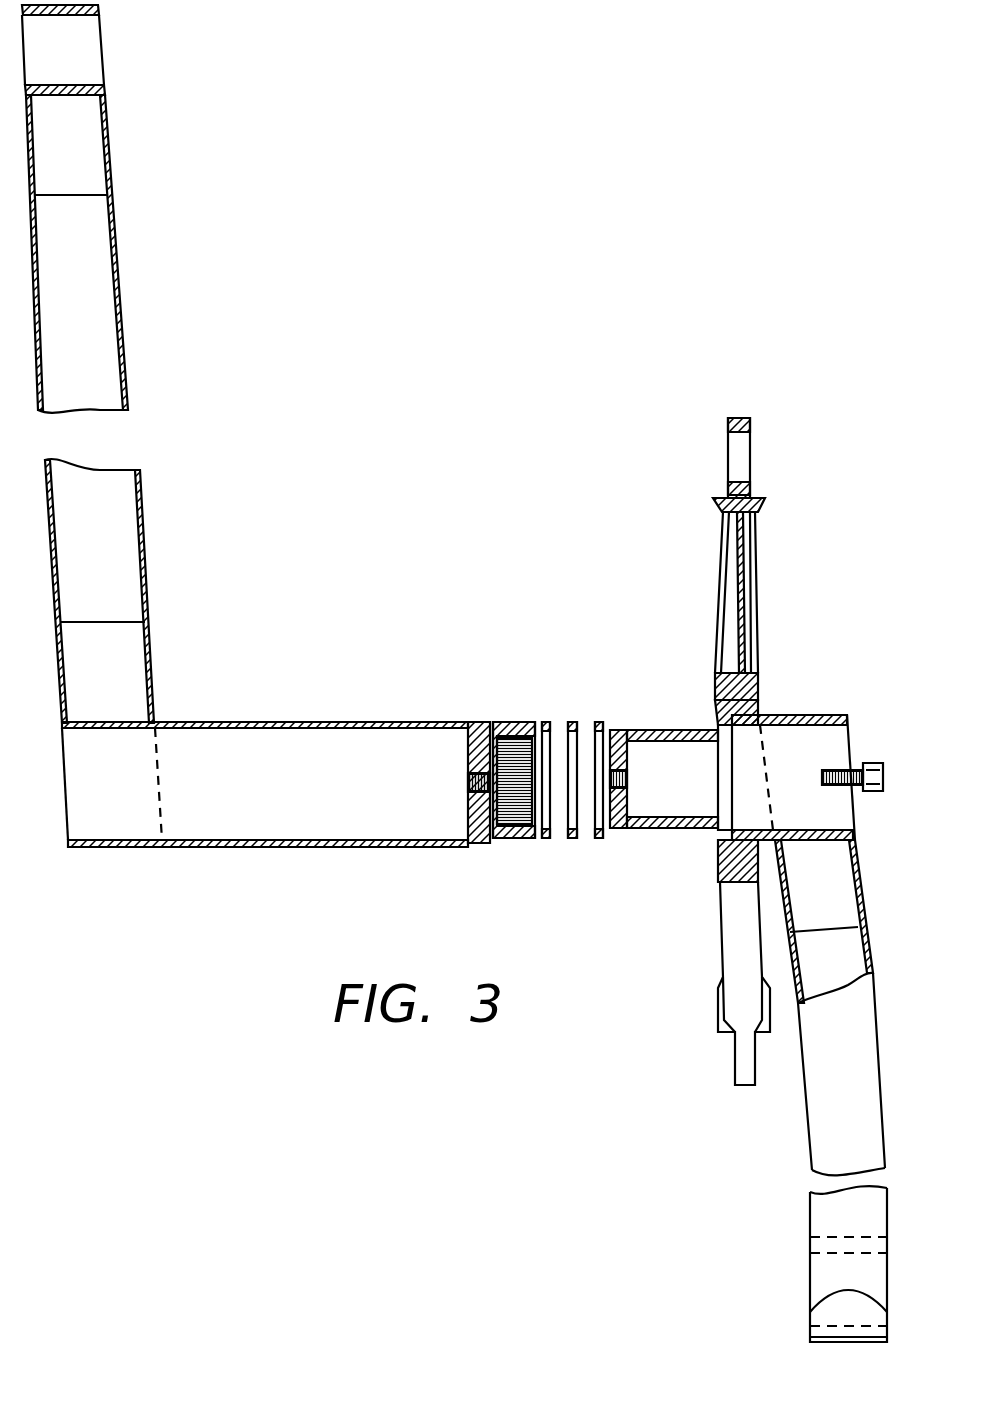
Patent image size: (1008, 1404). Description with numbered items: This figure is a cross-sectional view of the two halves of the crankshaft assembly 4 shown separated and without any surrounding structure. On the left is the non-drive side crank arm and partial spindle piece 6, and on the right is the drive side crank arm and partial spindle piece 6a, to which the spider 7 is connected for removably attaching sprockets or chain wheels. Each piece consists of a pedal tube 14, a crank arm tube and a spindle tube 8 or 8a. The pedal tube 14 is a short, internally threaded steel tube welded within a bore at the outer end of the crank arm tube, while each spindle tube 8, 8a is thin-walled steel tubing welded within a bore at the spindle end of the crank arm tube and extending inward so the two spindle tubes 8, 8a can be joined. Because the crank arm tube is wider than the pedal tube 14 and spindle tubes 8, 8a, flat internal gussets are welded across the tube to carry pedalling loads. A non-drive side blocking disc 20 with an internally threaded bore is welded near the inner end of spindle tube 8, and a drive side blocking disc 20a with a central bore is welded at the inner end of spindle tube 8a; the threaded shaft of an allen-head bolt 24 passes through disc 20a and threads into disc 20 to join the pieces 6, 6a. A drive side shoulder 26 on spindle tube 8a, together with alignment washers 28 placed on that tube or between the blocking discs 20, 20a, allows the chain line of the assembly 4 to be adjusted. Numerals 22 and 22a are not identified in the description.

The crankshaft assembly 4 is at (792, 716).
The non-drive side crank arm and partial spindle piece 6 is at (146, 552).
The drive side crank arm and partial spindle piece 6a is at (809, 1141).
The spider 7 is at (757, 600).
The non-drive side spindle tube 8 is at (268, 848).
The drive side spindle tube 8a is at (634, 730).
The pedal tube 14 is at (108, 88).
The non-drive side blocking disc 20 is at (472, 758).
The drive side blocking disc 20a is at (620, 818).
The threaded coupling 22 is at (485, 722).
The threaded coupling 22a is at (612, 825).
The allen-head bolt 24 is at (866, 762).
The drive side shoulder 26 is at (715, 840).
The alignment washers 28 is at (597, 722).